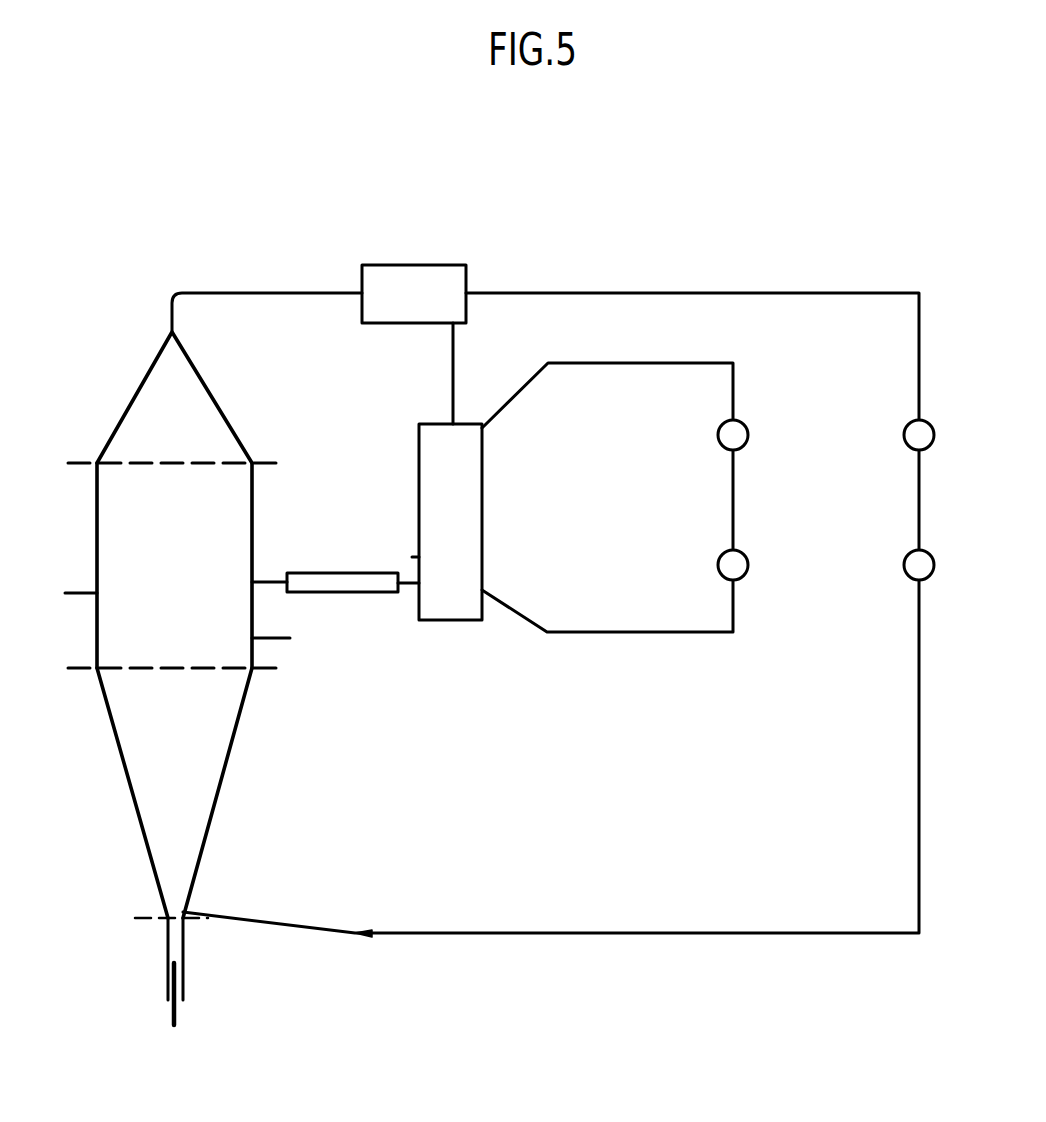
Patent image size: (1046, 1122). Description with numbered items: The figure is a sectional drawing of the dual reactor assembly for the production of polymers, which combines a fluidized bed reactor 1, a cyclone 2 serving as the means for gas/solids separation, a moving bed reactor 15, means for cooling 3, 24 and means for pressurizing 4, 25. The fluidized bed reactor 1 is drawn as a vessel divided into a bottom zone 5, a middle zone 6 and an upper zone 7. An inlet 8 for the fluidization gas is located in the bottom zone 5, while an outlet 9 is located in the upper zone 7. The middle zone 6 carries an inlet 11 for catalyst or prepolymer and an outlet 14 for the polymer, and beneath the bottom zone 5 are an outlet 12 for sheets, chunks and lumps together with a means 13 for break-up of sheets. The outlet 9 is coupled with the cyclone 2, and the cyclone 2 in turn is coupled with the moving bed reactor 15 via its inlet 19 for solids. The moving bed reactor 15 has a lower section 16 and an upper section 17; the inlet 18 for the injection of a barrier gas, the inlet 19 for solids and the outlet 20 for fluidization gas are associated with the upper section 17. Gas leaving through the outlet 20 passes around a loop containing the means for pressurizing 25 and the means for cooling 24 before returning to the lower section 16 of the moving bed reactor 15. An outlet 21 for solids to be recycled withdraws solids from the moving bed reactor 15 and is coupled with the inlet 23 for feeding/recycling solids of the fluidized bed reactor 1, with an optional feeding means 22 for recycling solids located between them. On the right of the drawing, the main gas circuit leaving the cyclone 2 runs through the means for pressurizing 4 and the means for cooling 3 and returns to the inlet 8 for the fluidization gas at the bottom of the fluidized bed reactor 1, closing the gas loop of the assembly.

The fluidized bed reactor 1 is at (252, 482).
The cyclone 2 is at (455, 281).
The means for cooling 3 is at (916, 552).
The means for pressurizing 4 is at (916, 420).
The bottom zone 5 is at (148, 753).
The middle zone 6 is at (145, 518).
The upper zone 7 is at (165, 422).
The inlet for fluidization gas 8 is at (186, 912).
The outlet 9 is at (174, 330).
The inlet for catalyst or prepolymer 11 is at (67, 596).
The outlet for sheets, chunks, and lumps 12 is at (184, 945).
The means for break-up of sheets 13 is at (167, 985).
The outlet for the polymer 14 is at (275, 640).
The moving bed reactor 15 is at (483, 450).
The lower section of the moving bed reactor 16 is at (453, 583).
The upper section of moving bed reactor 17 is at (460, 500).
The inlet for the injection of a barrier gas 18 is at (416, 557).
The inlet for solids 19 is at (455, 420).
The outlet for fluidization gas 20 is at (485, 430).
The outlet for solids to be recycled 21 is at (408, 583).
The feeding means for recycling solids 22 is at (320, 582).
The inlet for feeding/recycling solids 23 is at (254, 580).
The means for cooling (moving bed) 24 is at (737, 553).
The means for pressurizing (moving bed) 25 is at (736, 421).